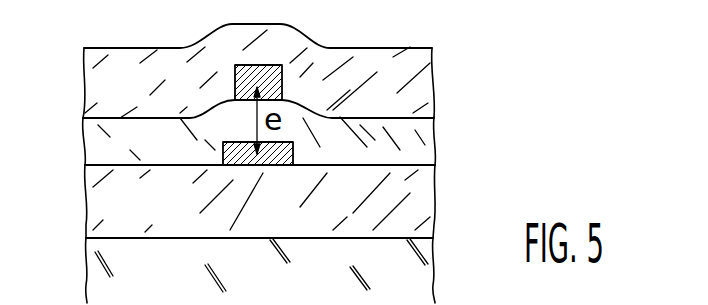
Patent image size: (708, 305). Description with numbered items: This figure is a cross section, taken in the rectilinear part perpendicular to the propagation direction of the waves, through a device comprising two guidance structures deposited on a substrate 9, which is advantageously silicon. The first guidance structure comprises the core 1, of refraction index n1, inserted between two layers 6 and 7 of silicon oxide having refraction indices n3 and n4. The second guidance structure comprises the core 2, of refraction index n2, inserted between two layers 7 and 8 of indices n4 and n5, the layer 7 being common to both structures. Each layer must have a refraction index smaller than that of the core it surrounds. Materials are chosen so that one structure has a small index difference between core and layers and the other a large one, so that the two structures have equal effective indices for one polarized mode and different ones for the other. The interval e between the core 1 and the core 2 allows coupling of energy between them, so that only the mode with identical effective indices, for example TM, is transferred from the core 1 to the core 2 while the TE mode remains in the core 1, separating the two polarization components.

The core 1 is at (260, 74).
The core 2 is at (283, 153).
The layer 6 is at (92, 77).
The layer 7 is at (92, 142).
The layer 8 is at (100, 207).
The substrate 9 is at (100, 277).